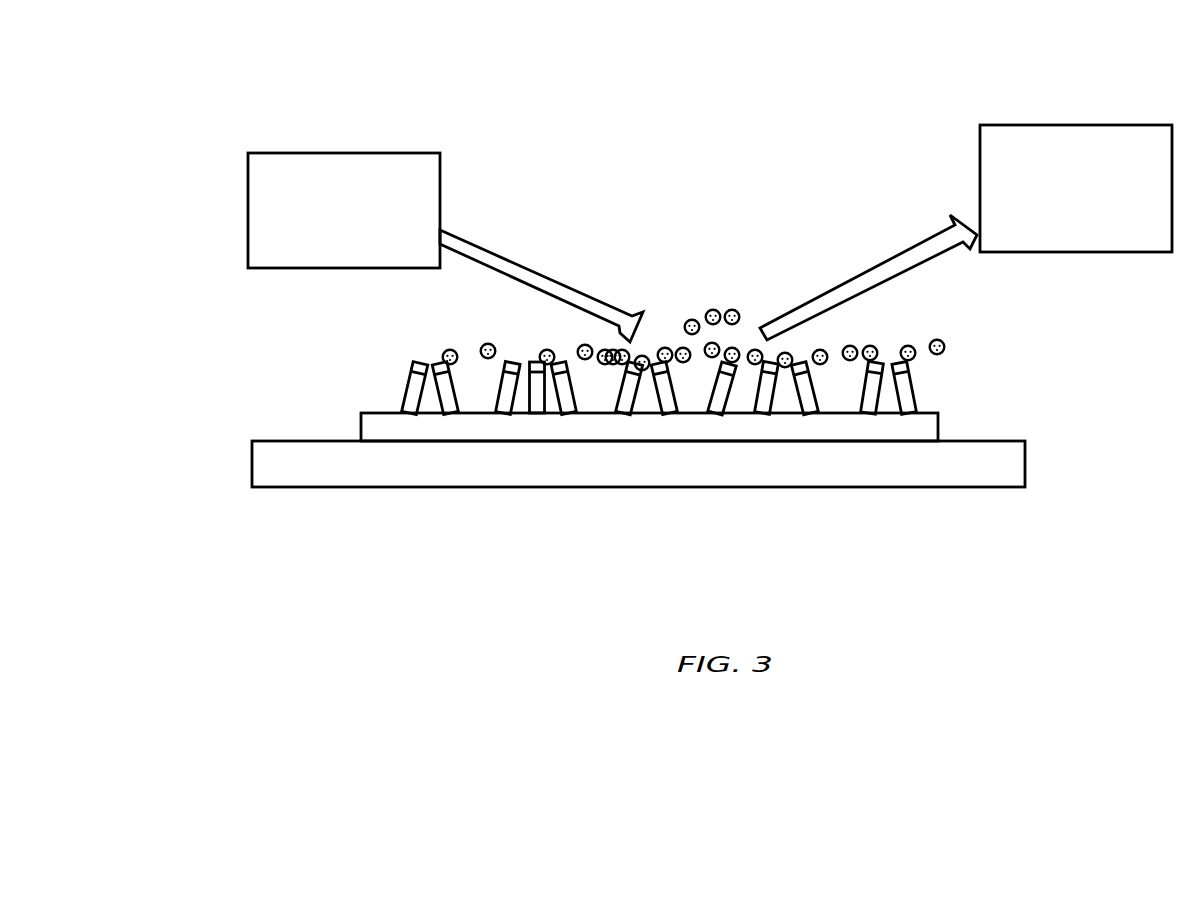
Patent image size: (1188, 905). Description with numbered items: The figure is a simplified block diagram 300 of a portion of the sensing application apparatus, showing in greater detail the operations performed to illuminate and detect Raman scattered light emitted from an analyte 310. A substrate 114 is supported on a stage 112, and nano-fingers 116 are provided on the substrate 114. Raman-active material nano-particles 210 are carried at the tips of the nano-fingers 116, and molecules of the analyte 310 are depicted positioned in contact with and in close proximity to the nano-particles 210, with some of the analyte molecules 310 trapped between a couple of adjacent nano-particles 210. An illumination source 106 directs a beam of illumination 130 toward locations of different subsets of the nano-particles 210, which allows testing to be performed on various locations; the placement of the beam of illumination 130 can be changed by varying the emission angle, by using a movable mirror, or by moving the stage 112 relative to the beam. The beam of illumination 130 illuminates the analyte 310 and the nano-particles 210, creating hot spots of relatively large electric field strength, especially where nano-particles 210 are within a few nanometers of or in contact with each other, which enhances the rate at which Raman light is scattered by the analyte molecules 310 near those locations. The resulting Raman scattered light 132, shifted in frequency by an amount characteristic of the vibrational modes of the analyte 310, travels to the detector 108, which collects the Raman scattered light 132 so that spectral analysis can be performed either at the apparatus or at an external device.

The block diagram 300 is at (238, 68).
The illumination source 106 is at (363, 250).
The detector 108 is at (1095, 214).
The beam of illumination 130 is at (550, 277).
The Raman scattered light 132 is at (900, 257).
The stage 112 is at (412, 487).
The substrate 114 is at (357, 428).
The nano-fingers 116 is at (632, 413).
The Raman-active material nano-particles 210 is at (790, 375).
The analyte 310 is at (542, 364).